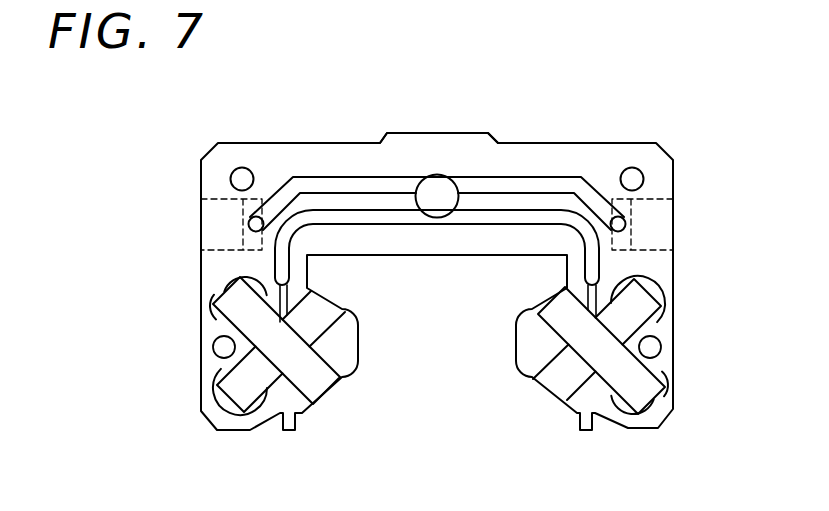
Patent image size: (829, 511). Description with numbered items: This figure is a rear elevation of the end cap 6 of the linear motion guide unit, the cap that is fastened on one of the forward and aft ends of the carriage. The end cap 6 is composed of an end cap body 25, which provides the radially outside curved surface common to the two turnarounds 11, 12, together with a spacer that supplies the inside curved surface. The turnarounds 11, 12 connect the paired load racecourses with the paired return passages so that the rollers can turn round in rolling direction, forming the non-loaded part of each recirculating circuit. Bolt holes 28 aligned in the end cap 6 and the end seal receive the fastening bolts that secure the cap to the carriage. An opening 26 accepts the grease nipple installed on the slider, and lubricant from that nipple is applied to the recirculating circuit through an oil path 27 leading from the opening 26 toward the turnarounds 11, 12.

The end cap 6 is at (509, 131).
The turnaround 11 is at (243, 309).
The turnaround 12 is at (313, 328).
The end cap body 25 is at (475, 153).
The opening 26 is at (432, 190).
The oil path 27 is at (293, 179).
The bolt hole 28 is at (238, 177).